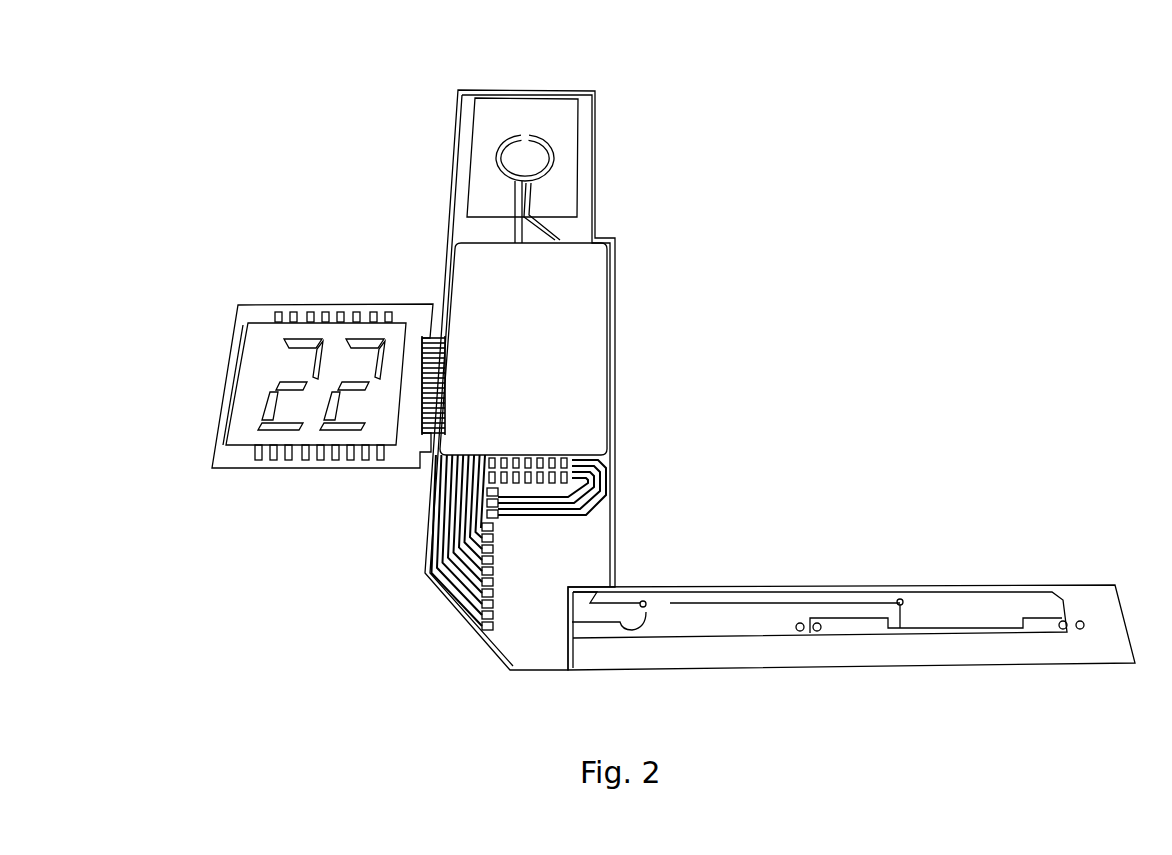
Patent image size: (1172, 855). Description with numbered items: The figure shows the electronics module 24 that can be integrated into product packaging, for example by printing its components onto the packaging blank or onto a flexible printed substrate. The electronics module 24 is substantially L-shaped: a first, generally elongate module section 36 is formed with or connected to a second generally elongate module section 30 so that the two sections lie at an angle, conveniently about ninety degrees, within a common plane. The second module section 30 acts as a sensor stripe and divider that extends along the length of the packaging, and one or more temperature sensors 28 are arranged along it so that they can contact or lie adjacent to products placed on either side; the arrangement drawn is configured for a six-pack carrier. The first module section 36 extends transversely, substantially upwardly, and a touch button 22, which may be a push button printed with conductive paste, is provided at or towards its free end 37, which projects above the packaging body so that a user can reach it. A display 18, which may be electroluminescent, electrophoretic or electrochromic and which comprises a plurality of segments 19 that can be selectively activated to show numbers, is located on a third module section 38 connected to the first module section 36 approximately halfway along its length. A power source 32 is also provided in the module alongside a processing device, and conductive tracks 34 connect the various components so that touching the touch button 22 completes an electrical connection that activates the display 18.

The display 18 is at (255, 338).
The segments 19 is at (275, 374).
The touch button 22 is at (523, 158).
The electronics module 24 is at (624, 86).
The temperature sensors 28 is at (530, 625).
The second module section 30 is at (900, 690).
The power source 32 is at (583, 346).
The conductive tracks 34 is at (437, 322).
The first module section 36 is at (453, 143).
The free end 37 is at (596, 181).
The third module section 38 is at (227, 468).